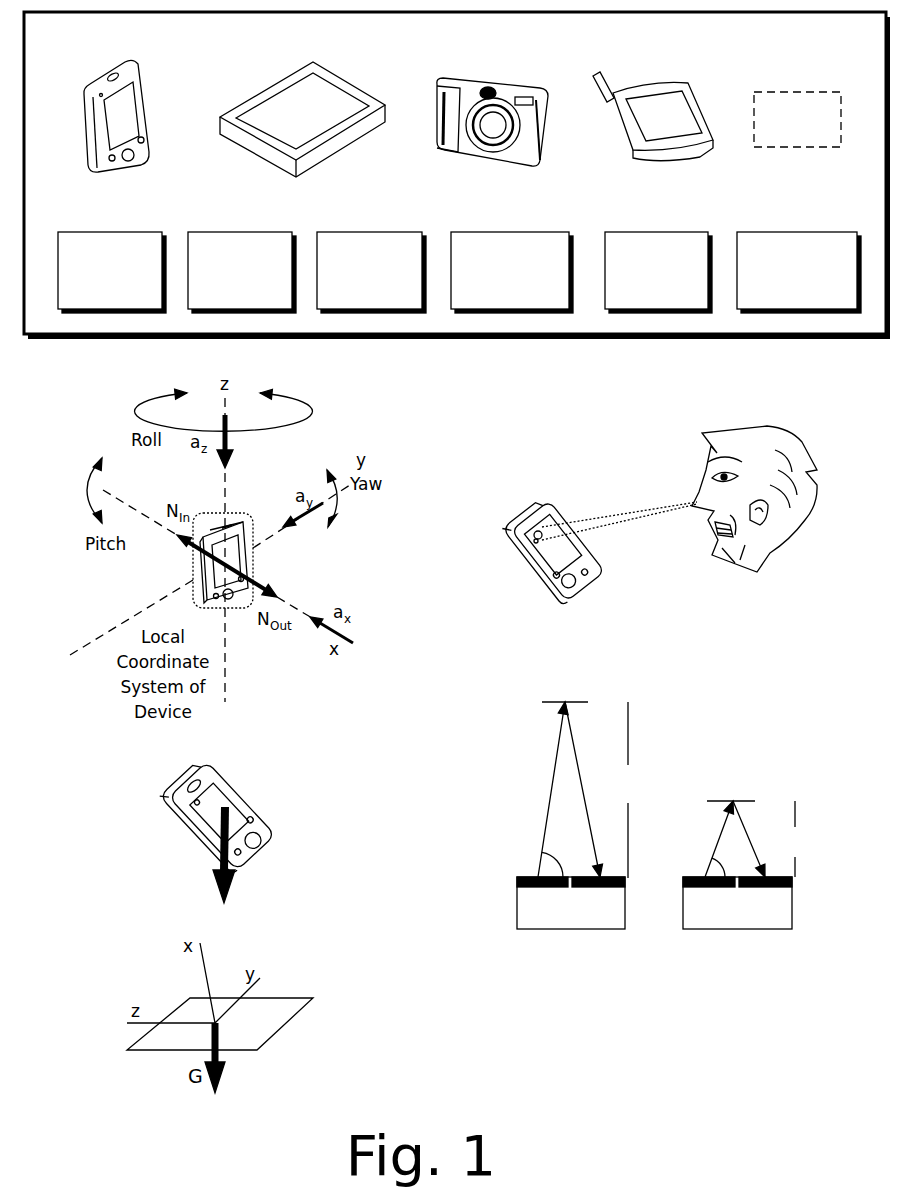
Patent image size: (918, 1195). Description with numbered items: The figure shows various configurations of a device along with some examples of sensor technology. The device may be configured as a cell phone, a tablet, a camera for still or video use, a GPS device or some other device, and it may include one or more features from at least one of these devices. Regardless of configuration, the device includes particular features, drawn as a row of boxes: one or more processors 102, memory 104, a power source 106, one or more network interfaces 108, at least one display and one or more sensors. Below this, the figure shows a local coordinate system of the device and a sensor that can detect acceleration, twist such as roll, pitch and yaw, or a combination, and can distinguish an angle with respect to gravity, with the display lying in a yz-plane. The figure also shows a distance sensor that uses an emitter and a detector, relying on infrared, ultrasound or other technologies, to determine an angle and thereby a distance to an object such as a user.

The processors 102 is at (112, 272).
The memory 104 is at (242, 272).
The power source 106 is at (371, 272).
The network interfaces 108 is at (512, 272).